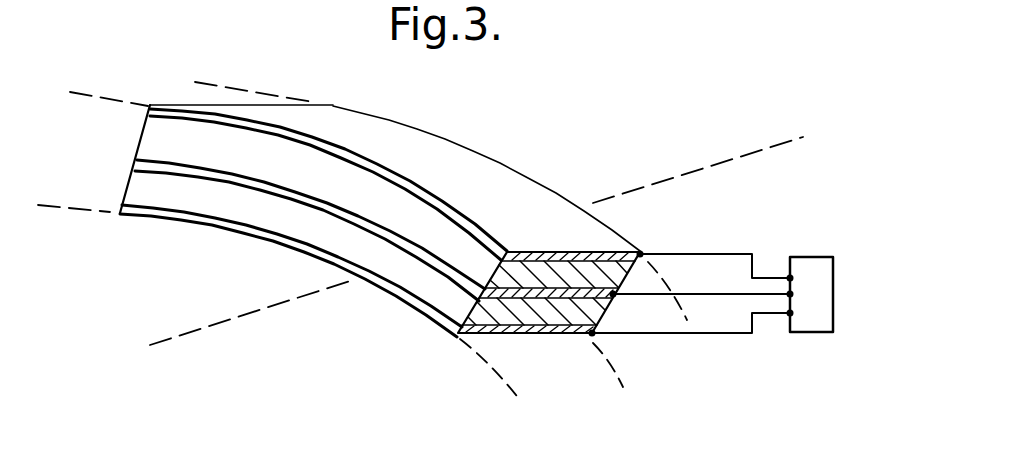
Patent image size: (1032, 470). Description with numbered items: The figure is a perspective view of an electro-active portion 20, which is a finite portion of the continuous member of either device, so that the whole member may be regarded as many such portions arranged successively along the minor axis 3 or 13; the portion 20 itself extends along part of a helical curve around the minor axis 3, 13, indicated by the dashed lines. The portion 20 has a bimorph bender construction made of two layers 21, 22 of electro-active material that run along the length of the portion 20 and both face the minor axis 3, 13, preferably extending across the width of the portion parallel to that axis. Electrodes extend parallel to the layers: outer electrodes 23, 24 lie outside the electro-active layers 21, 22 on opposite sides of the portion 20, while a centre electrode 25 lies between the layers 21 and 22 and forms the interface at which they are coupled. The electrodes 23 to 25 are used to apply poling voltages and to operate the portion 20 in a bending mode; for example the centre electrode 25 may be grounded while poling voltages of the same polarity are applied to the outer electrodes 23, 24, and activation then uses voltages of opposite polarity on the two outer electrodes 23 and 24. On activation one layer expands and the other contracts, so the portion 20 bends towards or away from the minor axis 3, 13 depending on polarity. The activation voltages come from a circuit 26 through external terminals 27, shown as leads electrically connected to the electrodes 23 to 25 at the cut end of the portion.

The minor axis 3 is at (418, 213).
The minor axis 13 is at (737, 153).
The electro-active portion 20 is at (445, 165).
The layer of electro-active material 21 is at (153, 142).
The layer of electro-active material 22 is at (145, 197).
The outer electrode 23 is at (226, 123).
The outer electrode 24 is at (220, 226).
The centre electrode 25 is at (283, 190).
The circuit 26 is at (820, 293).
The external terminals 27 is at (592, 333).